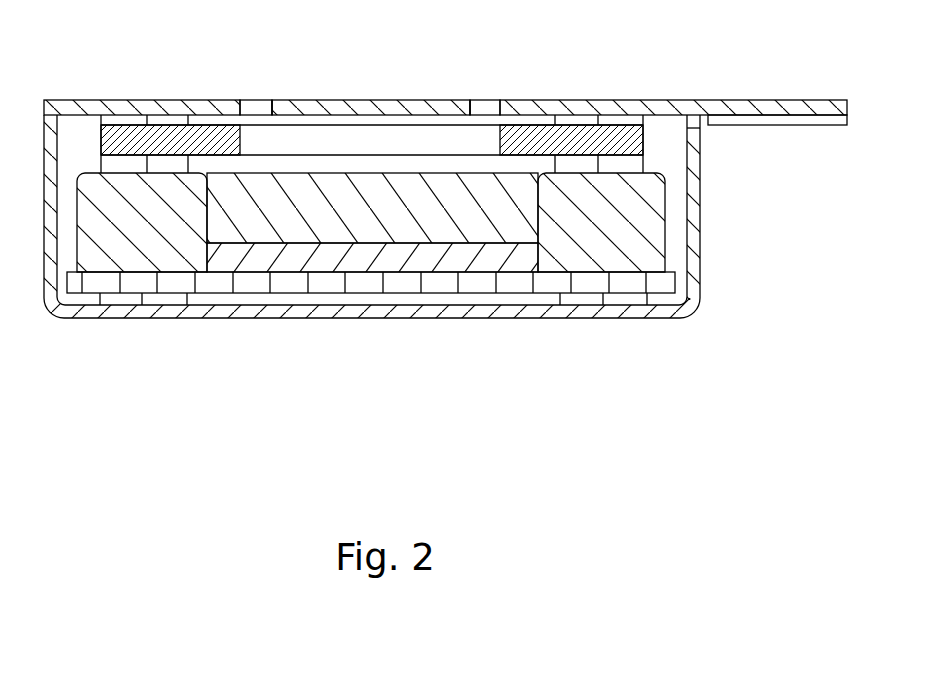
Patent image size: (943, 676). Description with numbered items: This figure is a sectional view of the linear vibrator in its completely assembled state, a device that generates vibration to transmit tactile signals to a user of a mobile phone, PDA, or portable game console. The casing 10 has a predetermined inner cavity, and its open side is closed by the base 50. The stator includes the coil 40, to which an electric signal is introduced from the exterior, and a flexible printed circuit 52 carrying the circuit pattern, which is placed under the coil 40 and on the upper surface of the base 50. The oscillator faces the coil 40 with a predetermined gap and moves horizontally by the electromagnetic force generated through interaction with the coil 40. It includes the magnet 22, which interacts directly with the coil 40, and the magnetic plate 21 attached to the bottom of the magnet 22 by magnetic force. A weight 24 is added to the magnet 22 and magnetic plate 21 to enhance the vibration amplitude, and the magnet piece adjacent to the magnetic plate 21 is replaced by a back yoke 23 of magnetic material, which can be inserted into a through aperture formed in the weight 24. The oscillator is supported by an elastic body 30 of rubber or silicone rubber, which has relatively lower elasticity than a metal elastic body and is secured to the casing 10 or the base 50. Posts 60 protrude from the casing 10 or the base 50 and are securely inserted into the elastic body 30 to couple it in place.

The casing 10 is at (700, 283).
The magnetic plate 21 is at (150, 280).
The magnet 22 is at (425, 228).
The back yoke 23 is at (367, 256).
The weight 24 is at (605, 250).
The elastic body 30 is at (80, 148).
The coil 40 is at (643, 139).
The base 50 is at (661, 108).
The flexible printed circuit 52 is at (307, 118).
The post 60 is at (127, 166).